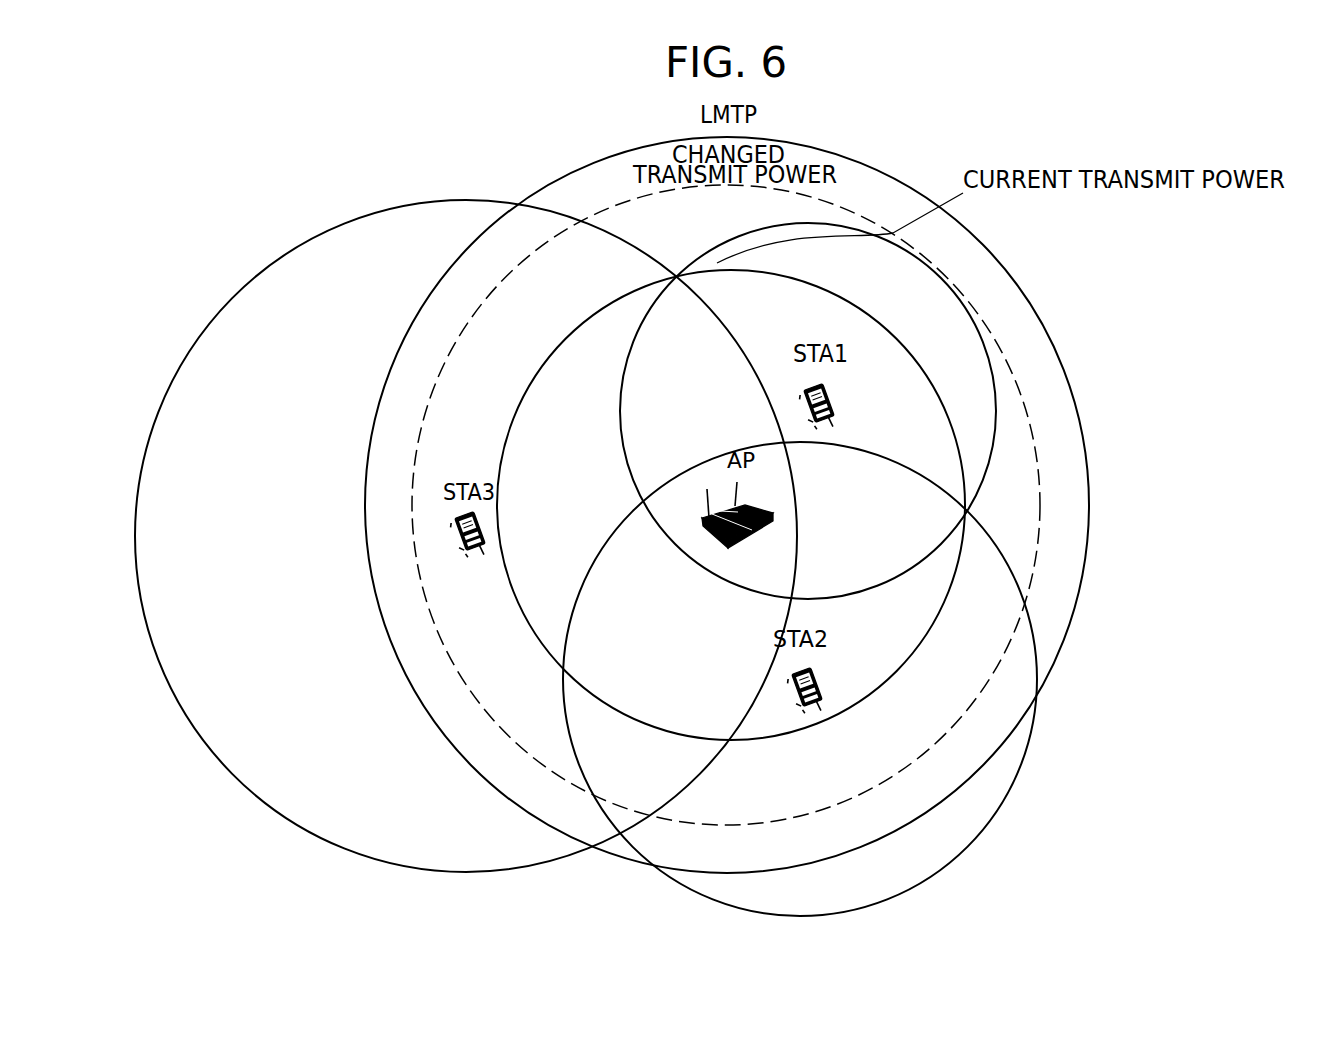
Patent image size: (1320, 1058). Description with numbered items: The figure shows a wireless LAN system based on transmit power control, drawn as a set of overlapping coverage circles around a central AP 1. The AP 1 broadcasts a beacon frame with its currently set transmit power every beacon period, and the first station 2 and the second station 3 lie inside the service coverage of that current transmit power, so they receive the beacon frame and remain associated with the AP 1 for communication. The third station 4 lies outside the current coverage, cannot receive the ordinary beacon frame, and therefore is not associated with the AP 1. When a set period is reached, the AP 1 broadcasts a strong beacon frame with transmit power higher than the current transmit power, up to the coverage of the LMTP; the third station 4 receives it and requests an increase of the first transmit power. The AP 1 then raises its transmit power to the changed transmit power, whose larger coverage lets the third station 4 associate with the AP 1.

The AP 1 is at (782, 521).
The station STA1 2 is at (843, 397).
The station STA2 3 is at (827, 685).
The station STA3 4 is at (490, 545).